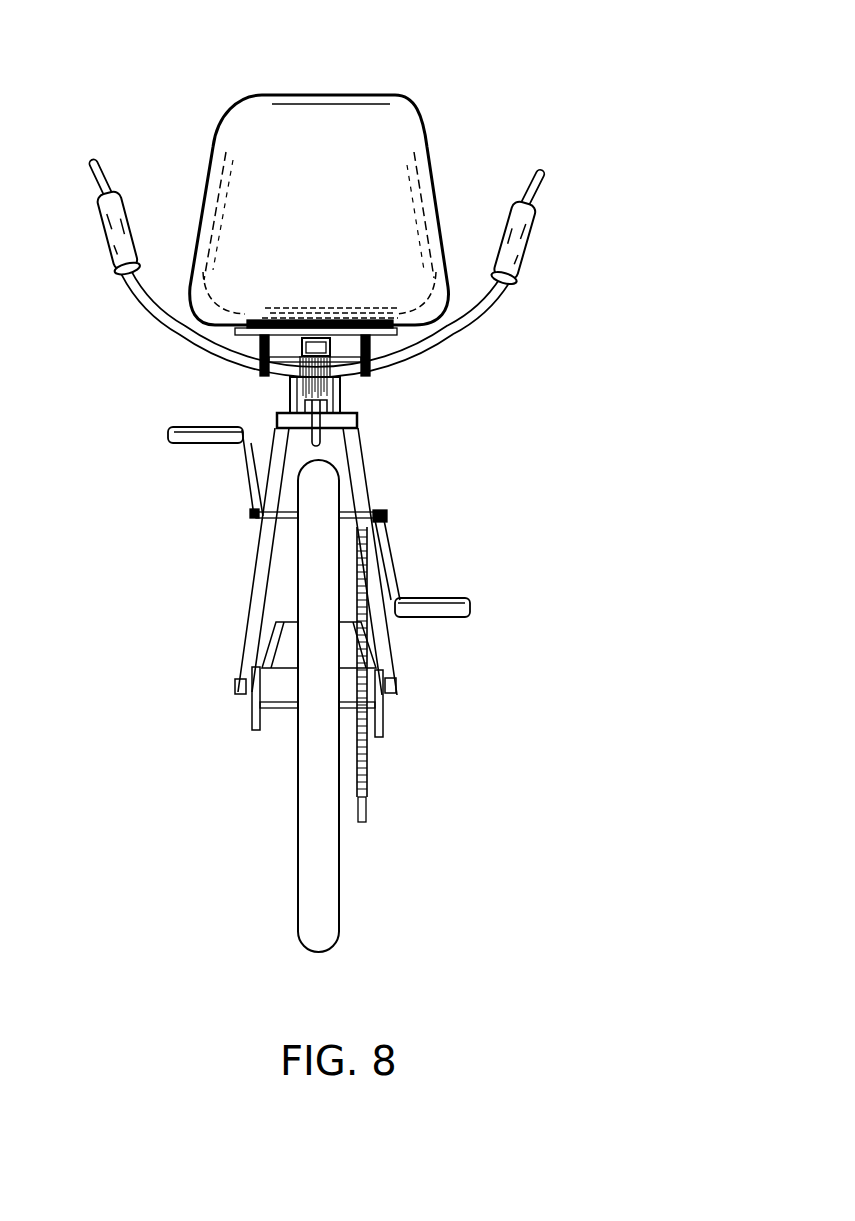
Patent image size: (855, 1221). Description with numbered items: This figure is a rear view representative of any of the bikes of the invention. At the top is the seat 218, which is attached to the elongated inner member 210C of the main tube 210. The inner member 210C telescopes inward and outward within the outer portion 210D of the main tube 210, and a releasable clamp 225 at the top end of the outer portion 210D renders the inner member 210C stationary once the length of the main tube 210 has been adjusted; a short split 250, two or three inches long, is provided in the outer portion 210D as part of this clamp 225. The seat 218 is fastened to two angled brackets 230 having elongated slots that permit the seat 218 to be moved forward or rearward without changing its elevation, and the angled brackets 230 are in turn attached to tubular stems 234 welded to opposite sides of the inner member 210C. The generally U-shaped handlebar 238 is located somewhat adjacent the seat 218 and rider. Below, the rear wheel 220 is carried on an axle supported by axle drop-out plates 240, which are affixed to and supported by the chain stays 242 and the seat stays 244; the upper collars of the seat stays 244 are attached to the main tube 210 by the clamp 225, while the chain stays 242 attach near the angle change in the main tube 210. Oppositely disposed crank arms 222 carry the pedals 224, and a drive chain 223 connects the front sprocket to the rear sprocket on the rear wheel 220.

The seat 218 is at (311, 95).
The handlebar 238 is at (467, 340).
The tubular stems 234 is at (358, 376).
The angled brackets 230 is at (388, 342).
The split 250 is at (340, 414).
The inner member 210C is at (300, 388).
The main tube 210 is at (330, 450).
The outer portion 210D is at (291, 391).
The clamp 225 is at (277, 418).
The seat stays 244 is at (257, 583).
The crank arms 222 is at (252, 492).
The pedals 224 is at (172, 447).
The chain stays 242 is at (275, 656).
The axle drop-out plates 240 is at (255, 730).
The drive chain 223 is at (360, 647).
The rear wheel 220 is at (323, 898).